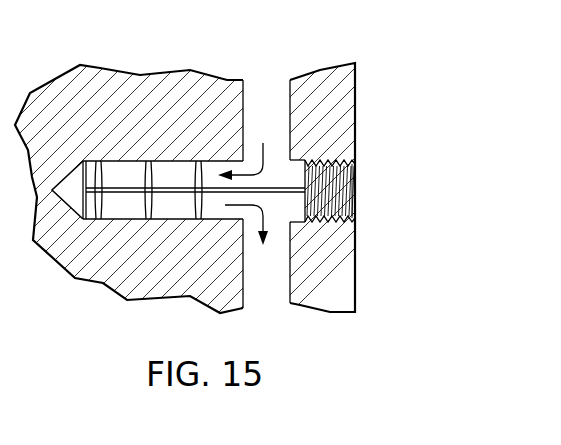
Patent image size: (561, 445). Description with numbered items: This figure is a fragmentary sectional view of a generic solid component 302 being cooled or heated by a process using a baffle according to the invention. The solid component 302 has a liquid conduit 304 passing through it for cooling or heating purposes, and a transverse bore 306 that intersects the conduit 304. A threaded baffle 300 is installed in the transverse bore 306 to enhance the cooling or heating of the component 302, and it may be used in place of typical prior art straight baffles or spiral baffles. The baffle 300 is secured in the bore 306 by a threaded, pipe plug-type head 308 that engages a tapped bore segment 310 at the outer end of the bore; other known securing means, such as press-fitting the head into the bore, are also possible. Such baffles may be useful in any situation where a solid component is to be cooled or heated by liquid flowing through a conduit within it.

The threaded baffle 300 is at (372, 177).
The generic solid component 302 is at (172, 112).
The liquid conduit 304 is at (265, 95).
The transverse bore 306 is at (118, 205).
The pipe plug-type head 308 is at (354, 216).
The tapped bore segment 310 is at (333, 223).